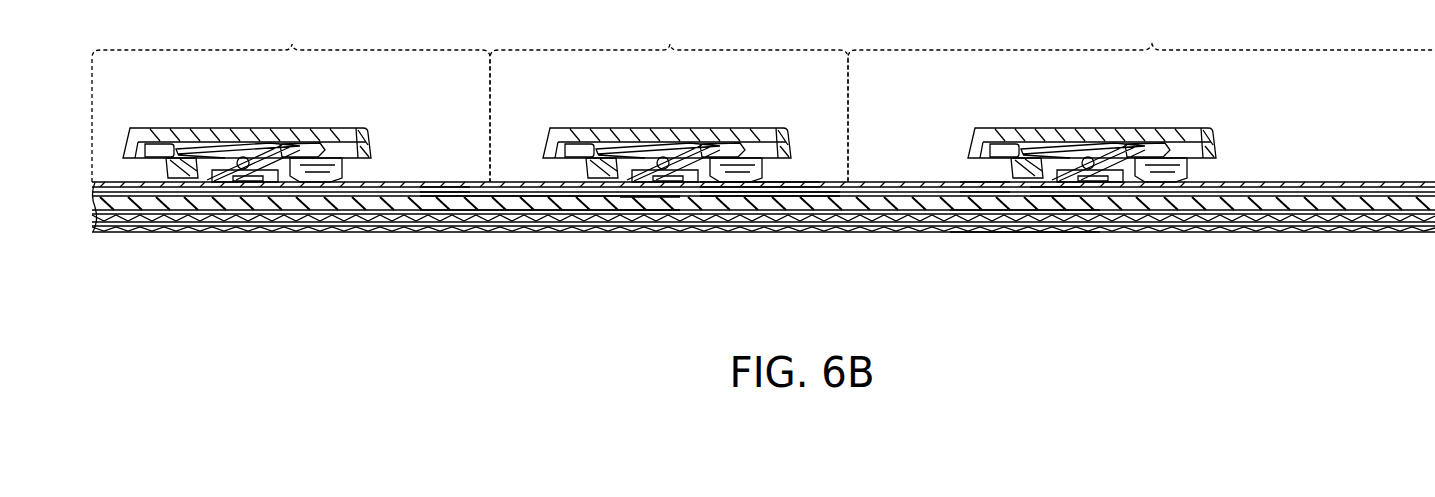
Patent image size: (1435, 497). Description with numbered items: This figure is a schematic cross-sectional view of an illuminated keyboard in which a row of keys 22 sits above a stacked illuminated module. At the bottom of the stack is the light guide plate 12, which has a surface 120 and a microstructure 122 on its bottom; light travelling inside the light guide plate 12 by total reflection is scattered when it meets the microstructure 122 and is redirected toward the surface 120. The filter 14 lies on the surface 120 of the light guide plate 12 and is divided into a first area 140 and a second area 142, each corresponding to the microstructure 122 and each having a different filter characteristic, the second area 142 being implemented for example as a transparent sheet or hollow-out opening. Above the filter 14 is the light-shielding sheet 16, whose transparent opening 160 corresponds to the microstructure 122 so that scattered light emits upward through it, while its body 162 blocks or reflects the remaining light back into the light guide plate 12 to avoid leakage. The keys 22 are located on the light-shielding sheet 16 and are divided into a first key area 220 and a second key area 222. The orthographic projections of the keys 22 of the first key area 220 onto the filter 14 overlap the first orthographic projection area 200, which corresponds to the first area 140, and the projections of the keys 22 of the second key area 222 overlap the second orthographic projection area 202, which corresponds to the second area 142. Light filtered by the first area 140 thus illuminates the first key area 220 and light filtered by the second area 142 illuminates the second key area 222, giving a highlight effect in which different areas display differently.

The light guide plate 12 is at (847, 291).
The surface 120 is at (797, 180).
The microstructure 122 is at (760, 188).
The filter 14 is at (674, 291).
The first area 140 is at (652, 199).
The second area 142 is at (441, 196).
The light-shielding sheet 16 is at (962, 291).
The transparent opening 160 is at (1056, 188).
The body 162 is at (984, 188).
The first orthographic projection area 200 is at (669, 98).
The second orthographic projection area 202 is at (763, 98).
The keys 22 is at (586, 129).
The first key area 220 is at (792, 126).
The second key area 222 is at (371, 126).